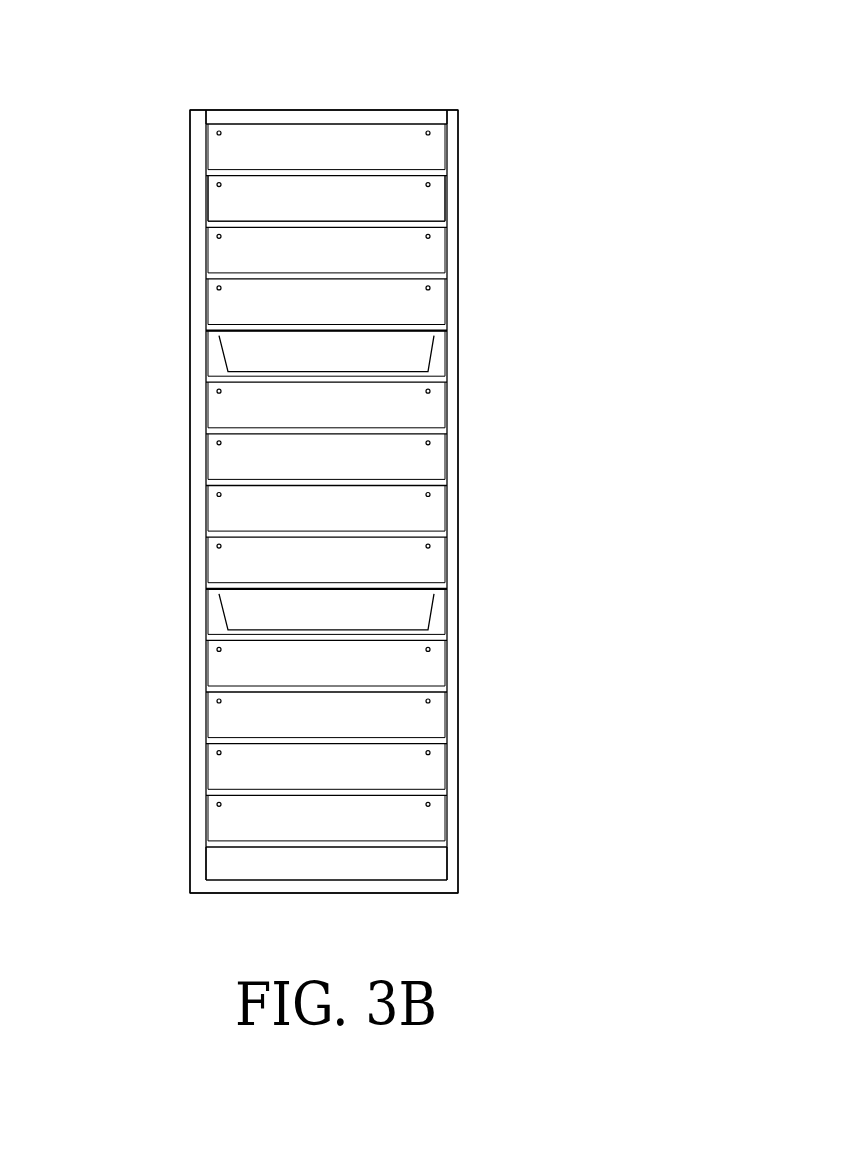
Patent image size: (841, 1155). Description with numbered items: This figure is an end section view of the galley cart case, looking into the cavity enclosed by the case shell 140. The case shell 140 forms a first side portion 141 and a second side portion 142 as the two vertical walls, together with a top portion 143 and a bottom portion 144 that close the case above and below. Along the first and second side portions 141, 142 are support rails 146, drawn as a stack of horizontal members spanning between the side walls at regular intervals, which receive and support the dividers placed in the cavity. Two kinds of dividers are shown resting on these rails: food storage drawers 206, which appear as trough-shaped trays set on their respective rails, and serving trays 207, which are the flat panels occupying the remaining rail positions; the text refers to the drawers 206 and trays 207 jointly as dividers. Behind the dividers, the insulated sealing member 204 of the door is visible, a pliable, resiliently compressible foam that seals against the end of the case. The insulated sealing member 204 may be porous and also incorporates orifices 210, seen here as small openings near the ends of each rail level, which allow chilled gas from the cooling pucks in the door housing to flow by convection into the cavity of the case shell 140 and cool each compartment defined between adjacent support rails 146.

The case shell 140 is at (272, 108).
The first side portion 141 is at (453, 388).
The second side portion 142 is at (198, 478).
The top portion 143 is at (408, 115).
The bottom portion 144 is at (398, 882).
The support rails 146 is at (443, 178).
The insulated sealing member 204 is at (345, 205).
The food storage drawers 206 is at (282, 360).
The serving trays 207 is at (252, 222).
The orifices 210 is at (430, 238).